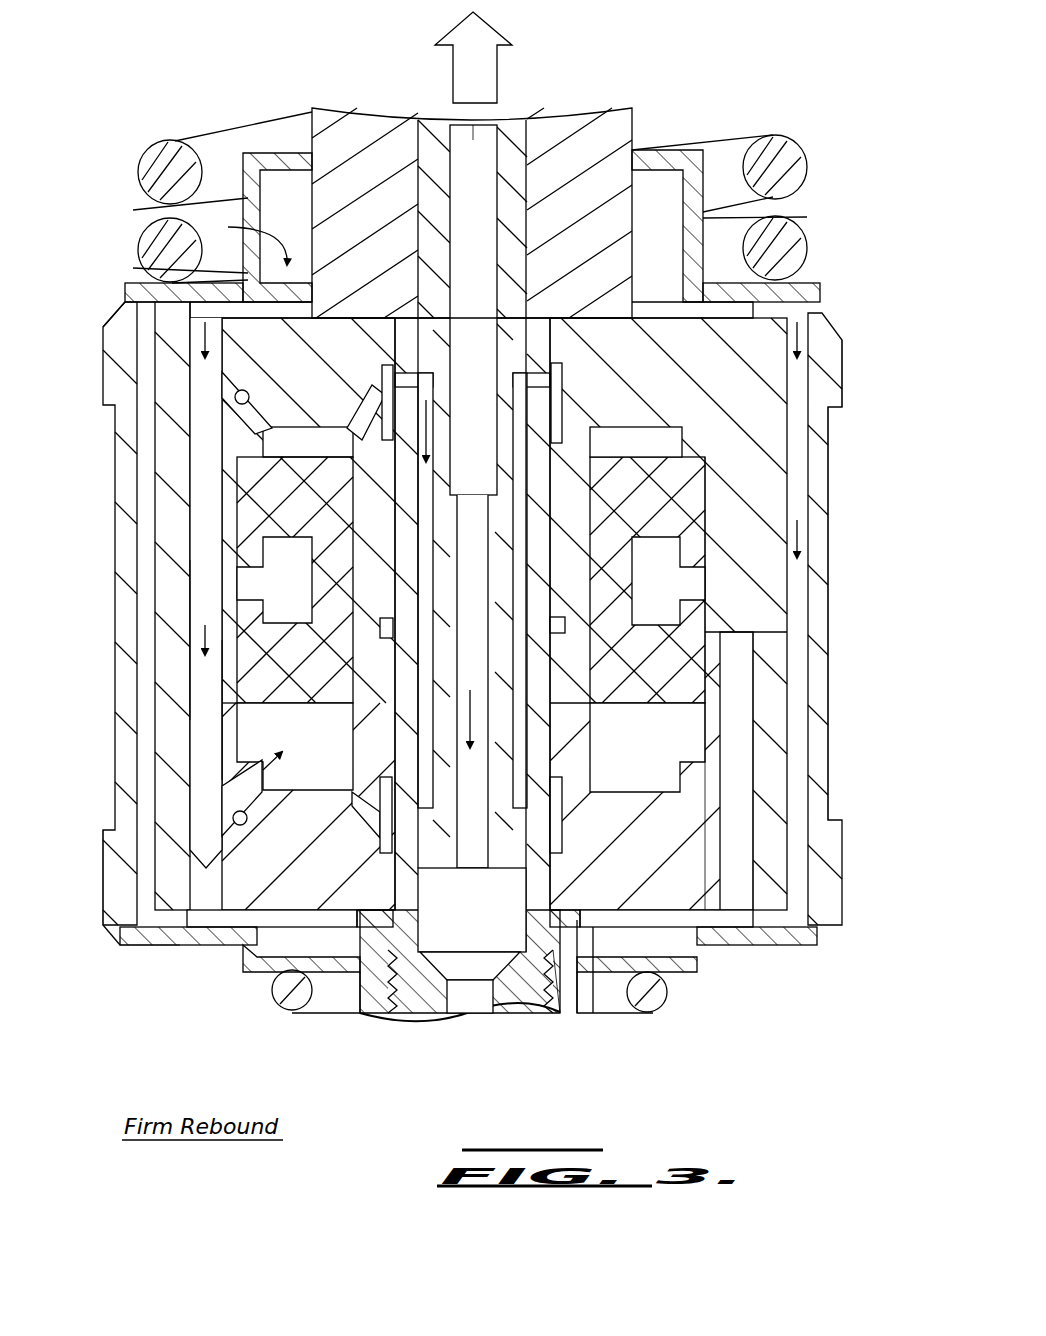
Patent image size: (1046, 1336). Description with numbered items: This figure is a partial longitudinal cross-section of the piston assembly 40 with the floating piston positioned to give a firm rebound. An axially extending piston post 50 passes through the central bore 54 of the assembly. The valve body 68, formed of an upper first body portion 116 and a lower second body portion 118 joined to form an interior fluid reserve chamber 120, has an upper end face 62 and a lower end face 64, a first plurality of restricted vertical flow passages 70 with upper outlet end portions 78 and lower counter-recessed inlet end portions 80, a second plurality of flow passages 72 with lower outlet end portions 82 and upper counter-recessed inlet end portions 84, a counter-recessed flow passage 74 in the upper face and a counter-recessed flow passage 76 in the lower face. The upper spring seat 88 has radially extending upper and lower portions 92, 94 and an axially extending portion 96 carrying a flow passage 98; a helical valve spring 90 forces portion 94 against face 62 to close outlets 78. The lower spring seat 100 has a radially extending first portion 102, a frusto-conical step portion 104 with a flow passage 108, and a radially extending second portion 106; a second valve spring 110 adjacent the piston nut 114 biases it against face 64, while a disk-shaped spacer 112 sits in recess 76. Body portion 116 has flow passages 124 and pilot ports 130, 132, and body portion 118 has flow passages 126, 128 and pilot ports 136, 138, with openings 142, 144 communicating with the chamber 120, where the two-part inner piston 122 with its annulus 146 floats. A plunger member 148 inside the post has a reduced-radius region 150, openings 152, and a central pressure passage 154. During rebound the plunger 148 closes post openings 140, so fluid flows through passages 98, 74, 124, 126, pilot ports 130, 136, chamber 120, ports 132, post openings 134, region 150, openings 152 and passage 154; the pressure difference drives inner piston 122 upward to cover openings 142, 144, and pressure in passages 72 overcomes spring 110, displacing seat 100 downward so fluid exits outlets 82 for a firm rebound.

The piston assembly 40 is at (844, 534).
The piston post 50 is at (348, 106).
The central bore 54 is at (547, 900).
The upper end face 62 is at (165, 316).
The lower end face 64 is at (137, 918).
The valve body 68 is at (832, 486).
The first plurality of restricted vertical flow passages 70 is at (147, 537).
The second plurality of restricted vertical flow passages 72 is at (802, 425).
The counter-recessed flow passage 74 is at (170, 328).
The counter-recessed flow passage 76 is at (205, 929).
The upper outlet end portion 78 is at (147, 391).
The lower counter-recessed inlet end portion 80 is at (143, 893).
The lower outlet end portion 82 is at (798, 919).
The upper counter-recessed inlet end portion 84 is at (814, 306).
The upper spring seat 88 is at (818, 278).
The helical valve spring 90 is at (172, 160).
The radially extending upper portion 92 is at (272, 152).
The radially extending lower portion 94 is at (140, 292).
The axially extending portion 96 is at (247, 273).
The flow passage 98 is at (248, 200).
The lower spring seat 100 is at (123, 947).
The radially extending first portion 102 is at (140, 949).
The frusto-conical step portion 104 is at (255, 973).
The radially extending second portion 106 is at (346, 973).
The flow passage 108 is at (245, 963).
The second valve spring 110 is at (660, 1000).
The disk-shaped spacer 112 is at (593, 922).
The piston nut 114 is at (563, 1015).
The upper first body portion 116 is at (735, 378).
The lower second body portion 118 is at (620, 879).
The fluid reserve chamber 120 is at (652, 452).
The inner piston 122 is at (685, 694).
The flow passages 124 is at (205, 463).
The flow passages 126 is at (205, 715).
The flow passages 128 is at (742, 840).
The pilot ports 130 is at (246, 396).
The pilot ports 132 is at (364, 408).
The openings 134 is at (513, 383).
The pilot ports 136 is at (240, 826).
The pilot ports 138 is at (365, 812).
The openings 140 is at (412, 832).
The opening 142 is at (177, 641).
The opening 144 is at (714, 644).
The central passageway or annulus 146 is at (694, 586).
The plunger member 148 is at (437, 106).
The region of reduced external radius 150 is at (428, 486).
The openings 152 is at (440, 694).
The central pressure passage 154 is at (488, 128).